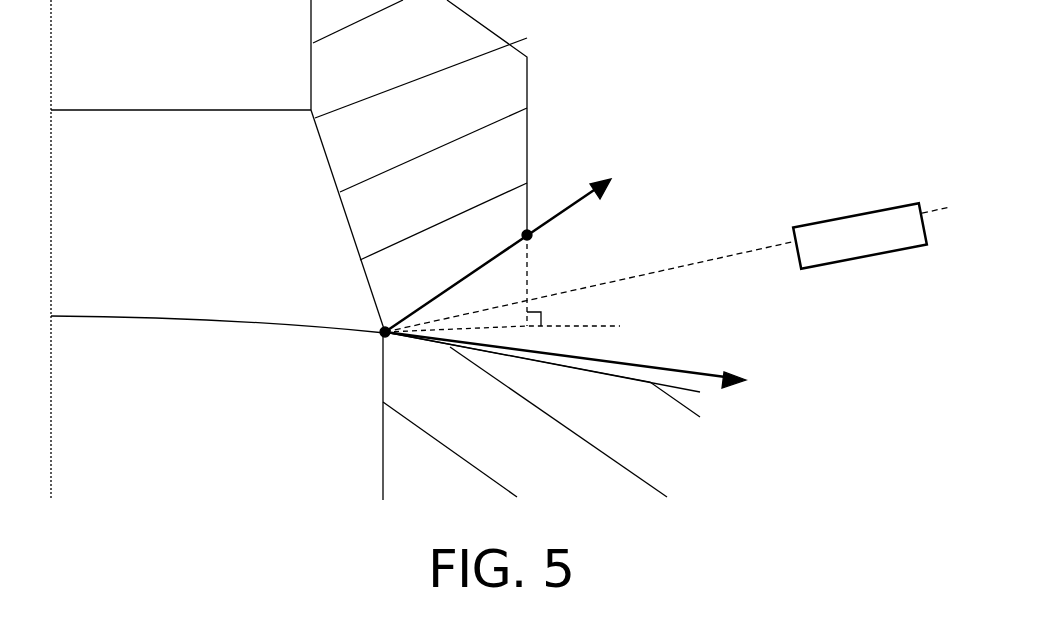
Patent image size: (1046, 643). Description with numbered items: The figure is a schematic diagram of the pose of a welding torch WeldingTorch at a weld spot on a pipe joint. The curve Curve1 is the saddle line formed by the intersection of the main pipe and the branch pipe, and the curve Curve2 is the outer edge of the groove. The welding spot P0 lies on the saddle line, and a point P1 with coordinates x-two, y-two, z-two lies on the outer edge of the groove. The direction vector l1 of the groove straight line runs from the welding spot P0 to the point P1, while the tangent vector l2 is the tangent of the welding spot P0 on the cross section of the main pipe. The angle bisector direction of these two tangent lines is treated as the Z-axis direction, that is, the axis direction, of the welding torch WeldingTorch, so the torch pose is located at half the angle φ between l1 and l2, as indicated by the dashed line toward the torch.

The curve 1 Curve1 is at (170, 318).
The curve 2 Curve2 is at (527, 235).
The welding spot P0 is at (367, 346).
The point on curve 2 P1 is at (502, 281).
The direction vector of the groove straight line l1 is at (636, 156).
The tangent vector of the welding spot l2 is at (771, 363).
The welding torch WeldingTorch is at (667, 267).